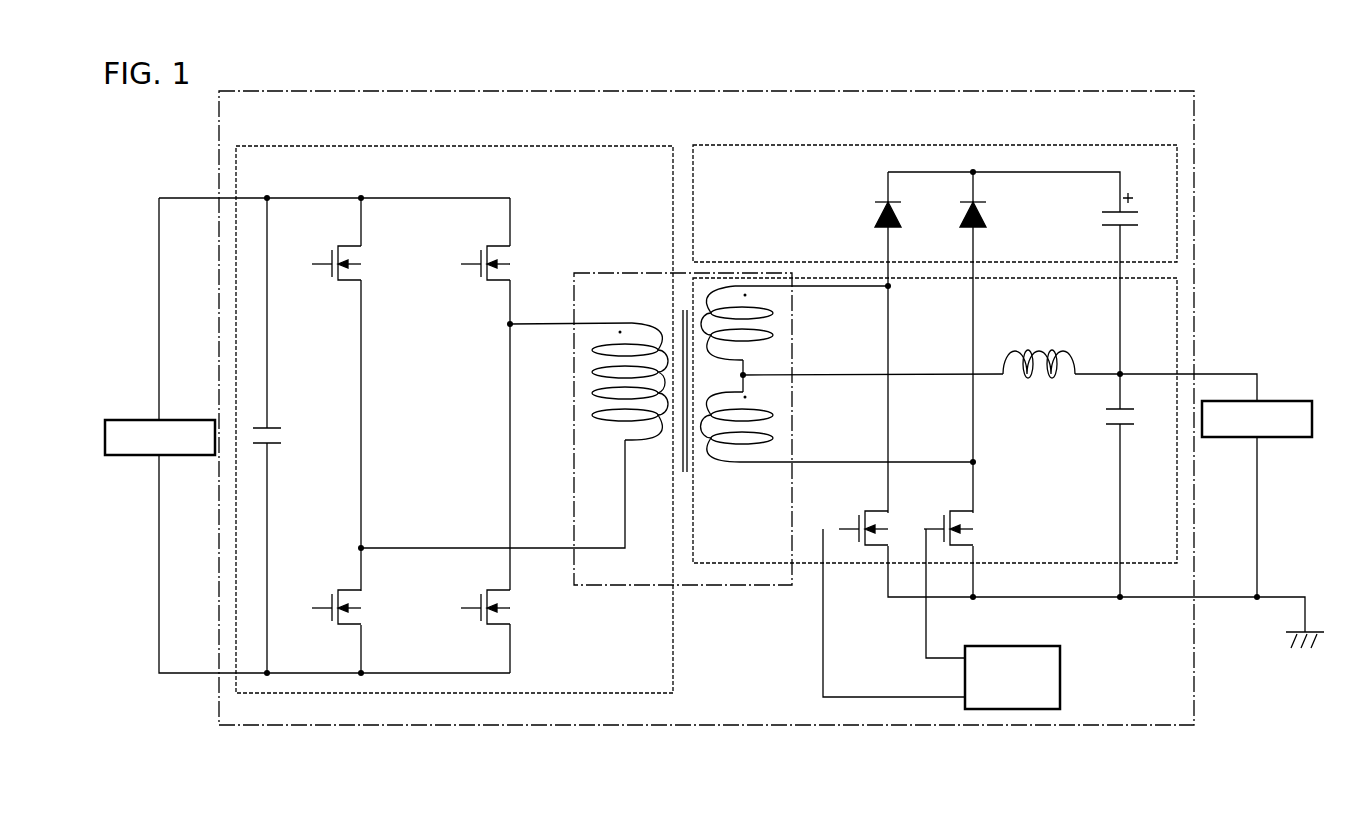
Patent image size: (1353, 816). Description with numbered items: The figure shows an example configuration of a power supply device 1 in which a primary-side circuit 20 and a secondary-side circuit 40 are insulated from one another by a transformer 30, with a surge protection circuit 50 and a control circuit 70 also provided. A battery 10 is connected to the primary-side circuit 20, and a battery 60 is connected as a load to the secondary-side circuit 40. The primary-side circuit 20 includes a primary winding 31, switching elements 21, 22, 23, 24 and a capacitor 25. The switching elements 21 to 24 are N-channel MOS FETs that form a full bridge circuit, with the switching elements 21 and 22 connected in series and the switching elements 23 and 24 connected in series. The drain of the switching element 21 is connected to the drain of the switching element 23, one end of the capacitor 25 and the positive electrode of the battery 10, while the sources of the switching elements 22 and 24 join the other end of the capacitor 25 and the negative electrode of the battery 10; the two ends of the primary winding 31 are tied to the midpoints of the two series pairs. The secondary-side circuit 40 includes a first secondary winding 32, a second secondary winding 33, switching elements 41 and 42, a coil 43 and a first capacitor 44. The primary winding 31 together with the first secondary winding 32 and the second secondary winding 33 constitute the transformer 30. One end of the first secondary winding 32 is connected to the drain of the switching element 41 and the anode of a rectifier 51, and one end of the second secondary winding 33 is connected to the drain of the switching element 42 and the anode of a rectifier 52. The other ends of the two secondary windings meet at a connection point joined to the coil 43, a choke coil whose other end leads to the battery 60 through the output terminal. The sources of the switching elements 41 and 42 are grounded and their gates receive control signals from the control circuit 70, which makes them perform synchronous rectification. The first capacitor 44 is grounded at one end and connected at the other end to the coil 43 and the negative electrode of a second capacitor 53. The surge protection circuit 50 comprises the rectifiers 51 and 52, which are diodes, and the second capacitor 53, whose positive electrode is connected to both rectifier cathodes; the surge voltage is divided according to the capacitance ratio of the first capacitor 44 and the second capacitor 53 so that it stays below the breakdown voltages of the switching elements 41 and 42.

The power supply device 1 is at (1200, 124).
The battery 10 is at (138, 419).
The primary-side circuit 20 is at (598, 145).
The switching element 21 is at (362, 264).
The switching element 22 is at (362, 608).
The switching element 23 is at (511, 264).
The switching element 24 is at (511, 608).
The capacitor 25 is at (283, 442).
The transformer 30 is at (642, 273).
The primary winding 31 is at (632, 323).
The first secondary winding 32 is at (745, 340).
The second secondary winding 33 is at (746, 415).
The secondary-side circuit 40 is at (1178, 306).
The switching element 41 is at (889, 529).
The switching element 42 is at (975, 529).
The coil 43 is at (1076, 352).
The first capacitor 44 is at (1107, 414).
The surge protection circuit 50 is at (713, 145).
The rectifier 51 is at (875, 216).
The rectifier 52 is at (987, 209).
The second capacitor 53 is at (1108, 224).
The battery 60 is at (1290, 401).
The control circuit 70 is at (1062, 672).